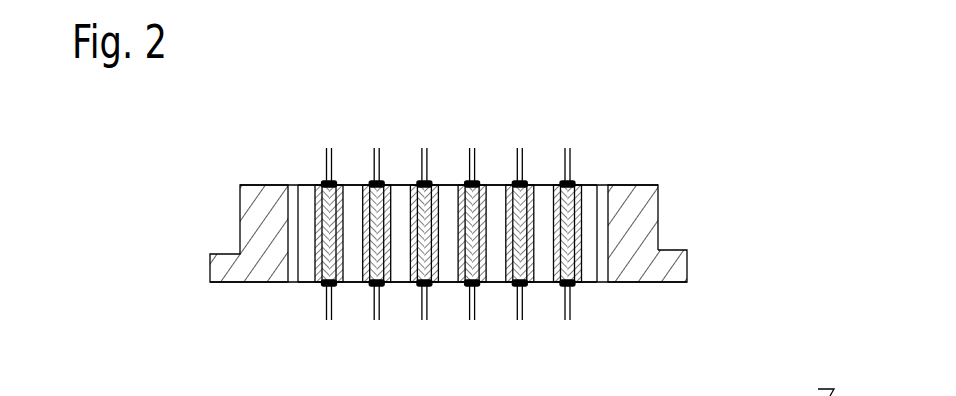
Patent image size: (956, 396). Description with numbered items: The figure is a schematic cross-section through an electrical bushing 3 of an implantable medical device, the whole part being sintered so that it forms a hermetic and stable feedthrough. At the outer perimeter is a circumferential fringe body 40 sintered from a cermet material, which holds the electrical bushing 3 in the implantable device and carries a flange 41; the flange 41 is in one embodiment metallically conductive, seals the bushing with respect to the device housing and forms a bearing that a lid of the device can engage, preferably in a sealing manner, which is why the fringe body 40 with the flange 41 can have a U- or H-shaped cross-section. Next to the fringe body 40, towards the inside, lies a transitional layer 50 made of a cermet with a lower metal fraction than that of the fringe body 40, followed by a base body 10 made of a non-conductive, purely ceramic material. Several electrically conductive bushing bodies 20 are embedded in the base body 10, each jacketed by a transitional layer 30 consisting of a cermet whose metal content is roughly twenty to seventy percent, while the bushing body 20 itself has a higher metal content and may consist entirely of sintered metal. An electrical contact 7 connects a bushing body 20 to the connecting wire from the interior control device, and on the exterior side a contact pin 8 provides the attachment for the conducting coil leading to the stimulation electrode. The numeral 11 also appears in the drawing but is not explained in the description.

The electrical bushing 3 is at (697, 121).
The electrical contact 7 is at (327, 183).
The contact pin 8 is at (328, 157).
The base body 10 is at (448, 185).
The base plate 11 is at (615, 372).
The bushing body 20 is at (523, 180).
The transitional layer 30 is at (507, 180).
The fringe body 40 is at (655, 205).
The flange 41 is at (680, 263).
The transitional layer 50 is at (292, 185).